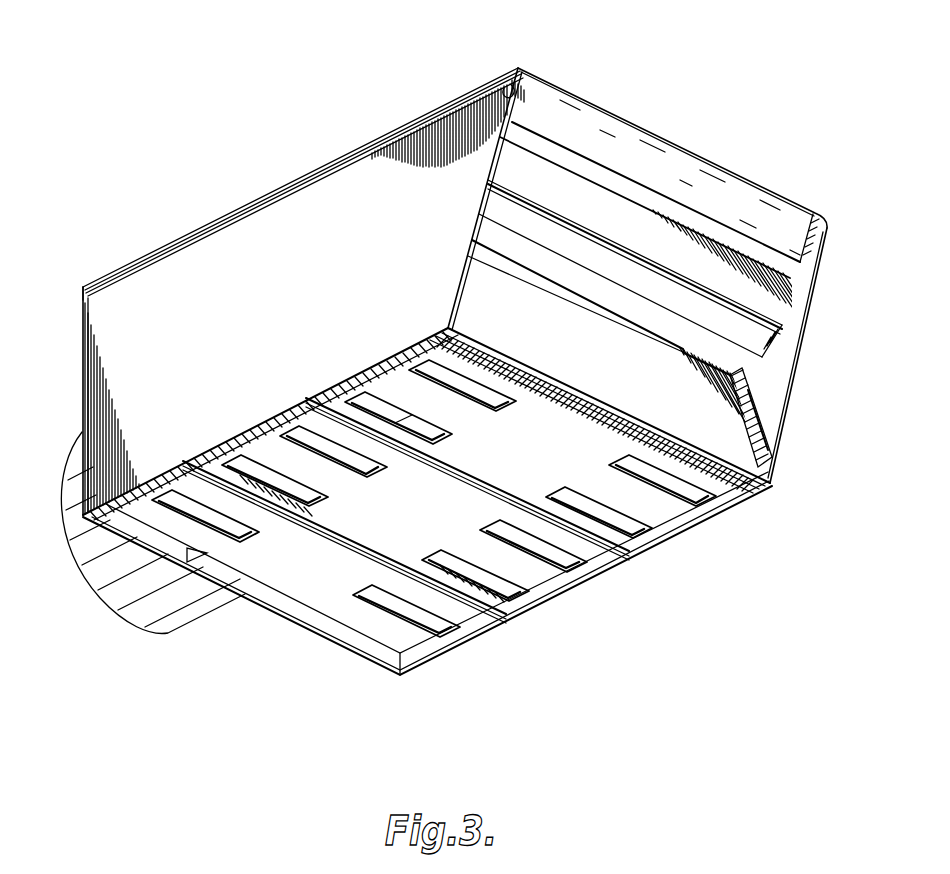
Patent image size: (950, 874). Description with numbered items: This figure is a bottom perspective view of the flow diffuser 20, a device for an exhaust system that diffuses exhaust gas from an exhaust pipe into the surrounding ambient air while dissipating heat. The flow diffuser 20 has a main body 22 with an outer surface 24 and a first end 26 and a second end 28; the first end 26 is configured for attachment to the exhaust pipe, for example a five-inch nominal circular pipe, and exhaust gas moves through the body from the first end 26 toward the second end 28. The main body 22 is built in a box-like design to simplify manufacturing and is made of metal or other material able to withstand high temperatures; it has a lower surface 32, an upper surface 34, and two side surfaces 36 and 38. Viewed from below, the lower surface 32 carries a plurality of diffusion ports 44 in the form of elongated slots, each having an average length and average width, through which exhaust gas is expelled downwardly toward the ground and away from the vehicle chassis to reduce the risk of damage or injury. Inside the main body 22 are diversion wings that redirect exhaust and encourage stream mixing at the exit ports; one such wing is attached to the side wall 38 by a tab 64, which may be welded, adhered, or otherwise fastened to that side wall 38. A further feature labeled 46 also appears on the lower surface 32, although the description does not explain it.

The flow diffuser 20 is at (289, 66).
The main body 22 is at (430, 110).
The outer surface 24 is at (210, 306).
The first end 26 is at (98, 597).
The second end 28 is at (690, 168).
The lower surface 32 is at (303, 578).
The upper surface 34 is at (498, 96).
The side surface 36 is at (762, 376).
The side surface 38 is at (287, 222).
The diffusion ports 44 is at (723, 510).
The slot 46 is at (647, 503).
The tab 64 is at (757, 417).